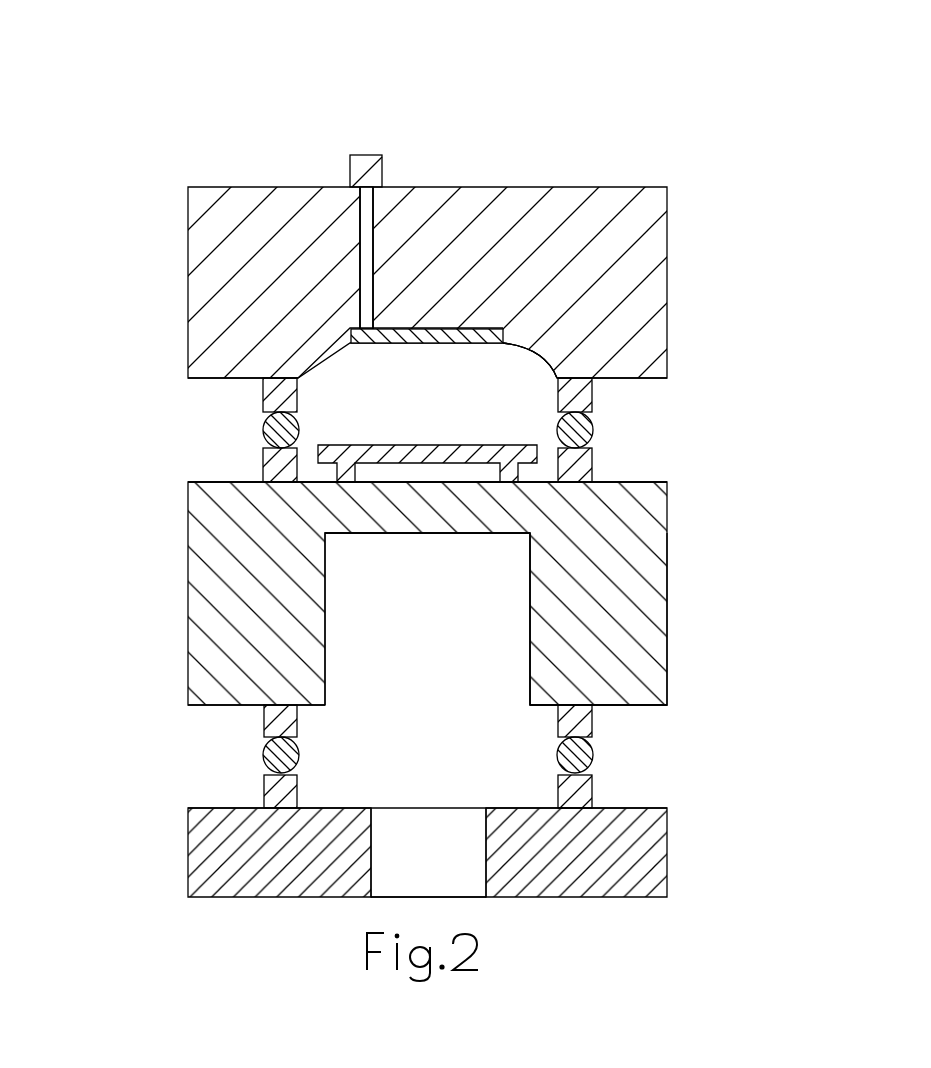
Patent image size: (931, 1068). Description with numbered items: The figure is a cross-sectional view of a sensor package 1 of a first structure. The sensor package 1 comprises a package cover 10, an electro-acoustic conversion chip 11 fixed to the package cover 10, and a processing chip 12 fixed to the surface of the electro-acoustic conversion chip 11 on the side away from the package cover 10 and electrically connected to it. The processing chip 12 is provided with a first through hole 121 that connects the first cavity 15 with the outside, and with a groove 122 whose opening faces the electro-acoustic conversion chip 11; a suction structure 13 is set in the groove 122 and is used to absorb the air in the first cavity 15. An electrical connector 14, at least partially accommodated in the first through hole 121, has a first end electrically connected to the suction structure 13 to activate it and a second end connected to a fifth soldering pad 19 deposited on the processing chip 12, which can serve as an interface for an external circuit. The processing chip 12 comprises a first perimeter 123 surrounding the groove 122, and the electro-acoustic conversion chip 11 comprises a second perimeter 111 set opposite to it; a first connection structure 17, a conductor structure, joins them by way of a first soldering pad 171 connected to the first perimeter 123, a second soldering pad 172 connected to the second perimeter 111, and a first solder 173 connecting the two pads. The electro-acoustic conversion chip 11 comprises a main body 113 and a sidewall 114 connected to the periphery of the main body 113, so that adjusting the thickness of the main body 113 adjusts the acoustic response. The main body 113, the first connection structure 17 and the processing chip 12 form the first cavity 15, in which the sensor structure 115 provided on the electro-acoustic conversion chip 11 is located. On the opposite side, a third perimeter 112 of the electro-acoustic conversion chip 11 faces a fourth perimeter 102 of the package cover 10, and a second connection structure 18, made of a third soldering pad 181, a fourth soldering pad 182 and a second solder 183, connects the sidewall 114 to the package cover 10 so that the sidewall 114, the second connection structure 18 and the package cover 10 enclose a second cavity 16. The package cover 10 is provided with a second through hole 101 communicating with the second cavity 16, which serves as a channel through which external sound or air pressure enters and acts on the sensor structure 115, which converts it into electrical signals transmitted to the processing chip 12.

The sensor package 1 is at (90, 50).
The package cover 10 is at (785, 793).
The second through hole 101 is at (430, 857).
The fourth perimeter 102 is at (607, 808).
The electro-acoustic conversion chip 11 is at (785, 737).
The second perimeter 111 is at (632, 481).
The third perimeter 112 is at (618, 706).
The main body 113 is at (577, 509).
The sidewall 114 is at (633, 634).
The sensor structure 115 is at (497, 453).
The processing chip 12 is at (82, 273).
The first through hole 121 is at (362, 270).
The groove 122 is at (410, 357).
The first perimeter 123 is at (230, 380).
The suction structure 13 is at (560, 363).
The electrical connector 14 is at (362, 220).
The first cavity 15 is at (430, 416).
The second cavity 16 is at (410, 645).
The first connection structure 17 is at (82, 380).
The first soldering pad 171 is at (277, 386).
The second soldering pad 172 is at (287, 455).
The first solder 173 is at (280, 425).
The second connection structure 18 is at (82, 707).
The third soldering pad 181 is at (280, 716).
The fourth soldering pad 182 is at (285, 782).
The second solder 183 is at (282, 752).
The fifth soldering pad 19 is at (350, 173).